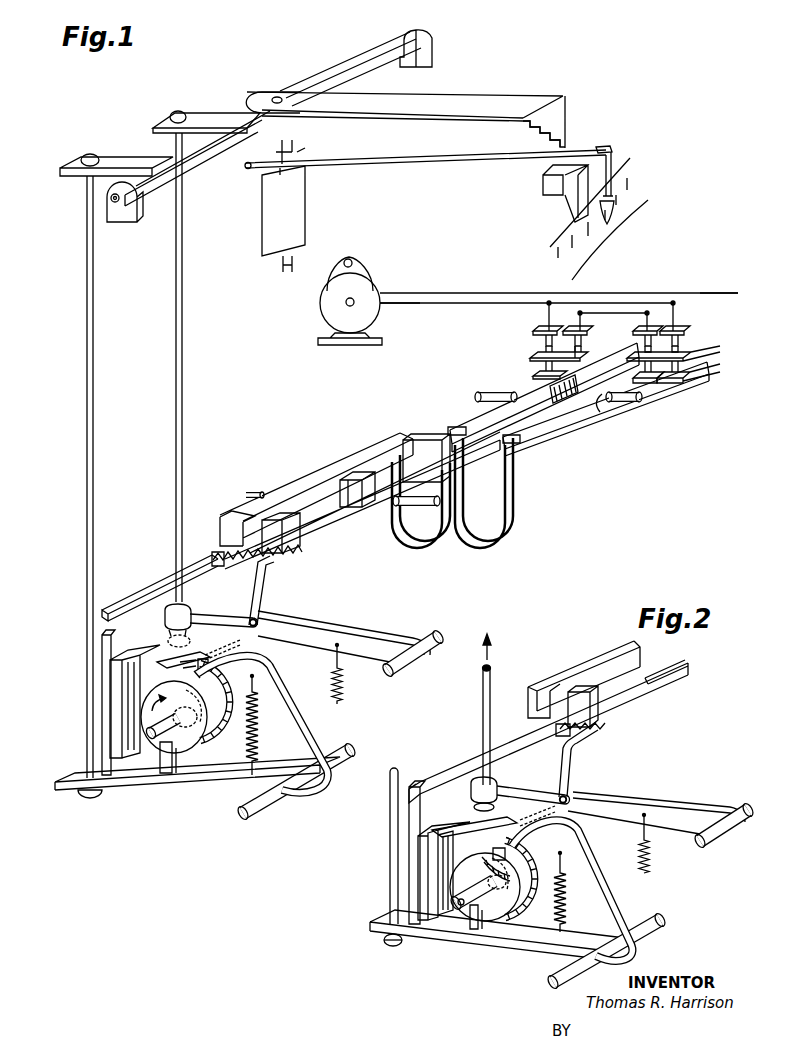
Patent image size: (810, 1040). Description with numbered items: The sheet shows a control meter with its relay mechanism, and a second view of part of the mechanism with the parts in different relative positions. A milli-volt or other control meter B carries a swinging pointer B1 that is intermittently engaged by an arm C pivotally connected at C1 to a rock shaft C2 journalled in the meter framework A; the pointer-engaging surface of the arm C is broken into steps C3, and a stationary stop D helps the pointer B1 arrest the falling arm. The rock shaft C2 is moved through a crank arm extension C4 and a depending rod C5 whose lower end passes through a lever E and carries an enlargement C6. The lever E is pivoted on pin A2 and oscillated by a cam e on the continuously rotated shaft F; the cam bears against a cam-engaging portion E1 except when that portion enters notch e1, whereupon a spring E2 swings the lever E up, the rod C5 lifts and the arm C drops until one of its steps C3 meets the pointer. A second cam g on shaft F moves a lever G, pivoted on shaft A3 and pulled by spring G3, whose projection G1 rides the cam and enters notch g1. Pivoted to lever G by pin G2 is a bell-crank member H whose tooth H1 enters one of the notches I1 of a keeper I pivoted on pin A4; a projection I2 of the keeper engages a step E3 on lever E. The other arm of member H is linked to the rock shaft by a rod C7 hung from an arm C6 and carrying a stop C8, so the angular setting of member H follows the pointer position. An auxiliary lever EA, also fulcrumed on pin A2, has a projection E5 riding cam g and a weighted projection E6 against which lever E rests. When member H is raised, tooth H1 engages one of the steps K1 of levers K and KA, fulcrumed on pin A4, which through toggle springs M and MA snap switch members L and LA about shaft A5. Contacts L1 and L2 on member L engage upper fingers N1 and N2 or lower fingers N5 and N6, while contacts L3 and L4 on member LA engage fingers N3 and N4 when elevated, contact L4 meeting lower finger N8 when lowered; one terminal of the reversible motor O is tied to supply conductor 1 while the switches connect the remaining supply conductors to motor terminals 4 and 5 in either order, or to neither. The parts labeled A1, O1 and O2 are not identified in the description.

In FIG. 1, the crank arm extension C4 is at (116, 165).
In FIG. 1, the depending rod C5 is at (87, 472).
In FIG. 2, the depending rod C5 is at (390, 868).
In FIG. 1, the meter framework A is at (123, 222).
In FIG. 1, the arm C is at (492, 103).
In FIG. 1, the enlargement C6 is at (211, 113).
In FIG. 2, the enlargement C6 is at (386, 945).
In FIG. 1, the depending rod C7 is at (183, 423).
In FIG. 2, the depending rod C7 is at (492, 678).
In FIG. 1, the pivotal connection C1 is at (277, 96).
In FIG. 1, the rock shaft C2 is at (360, 58).
In FIG. 1, the steps or notches C3 is at (556, 143).
In FIG. 1, the swinging pointer B1 is at (399, 163).
In FIG. 1, the stationary stop D is at (609, 148).
In FIG. 1, the control meter B is at (300, 200).
In FIG. 1, the hatched support A1 is at (606, 253).
In FIG. 1, the reversible motor O is at (322, 313).
In FIG. 1, the upper hole O2 is at (352, 263).
In FIG. 1, the pivot hole O1 is at (355, 300).
In FIG. 1, the motor terminal 4 is at (454, 304).
In FIG. 1, the motor terminal 5 is at (419, 304).
In FIG. 1, the supply conductor 1 is at (736, 296).
In FIG. 1, the spring contact finger N4 is at (541, 331).
In FIG. 1, the spring contact finger N3 is at (589, 333).
In FIG. 1, the upper spring contact finger N2 is at (641, 335).
In FIG. 1, the upper spring contact finger N1 is at (692, 333).
In FIG. 1, the contact L4 is at (536, 356).
In FIG. 1, the contact L3 is at (583, 355).
In FIG. 1, the contact L2 is at (636, 353).
In FIG. 1, the contact L1 is at (689, 355).
In FIG. 1, the lower spring contact finger N8 is at (533, 374).
In FIG. 1, the lower spring contact finger N6 is at (652, 383).
In FIG. 1, the lower spring contact finger N5 is at (694, 380).
In FIG. 1, the switch member LA is at (468, 440).
In FIG. 1, the switch member L is at (540, 437).
In FIG. 1, the shaft A5 is at (630, 404).
In FIG. 1, the lever KA is at (291, 487).
In FIG. 2, the lever KA is at (597, 663).
In FIG. 1, the lever K is at (316, 500).
In FIG. 2, the lever K is at (628, 690).
In FIG. 1, the keeper I is at (355, 512).
In FIG. 2, the keeper I is at (668, 684).
In FIG. 1, the steps K1 is at (262, 552).
In FIG. 2, the steps K1 is at (606, 730).
In FIG. 1, the notches I1 is at (213, 552).
In FIG. 2, the notches I1 is at (556, 722).
In FIG. 1, the projection I2 is at (150, 602).
In FIG. 2, the projection I2 is at (458, 760).
In FIG. 1, the tooth H1 is at (252, 562).
In FIG. 2, the tooth H1 is at (590, 742).
In FIG. 1, the member H is at (228, 614).
In FIG. 2, the member H is at (550, 791).
In FIG. 1, the enlargement C8 is at (165, 622).
In FIG. 2, the enlargement C8 is at (471, 798).
In FIG. 1, the cam engaging projection G1 is at (150, 668).
In FIG. 2, the cam engaging projection G1 is at (580, 836).
In FIG. 1, the lever G is at (338, 633).
In FIG. 2, the lever G is at (671, 801).
In FIG. 1, the pivot pin G2 is at (262, 630).
In FIG. 2, the pivot pin G2 is at (571, 797).
In FIG. 1, the step E3 is at (101, 641).
In FIG. 2, the step E3 is at (410, 840).
In FIG. 1, the cam notch g1 is at (170, 697).
In FIG. 1, the projection E5 is at (256, 673).
In FIG. 2, the projection E5 is at (492, 853).
In FIG. 1, the spring G3 is at (342, 696).
In FIG. 2, the spring G3 is at (651, 860).
In FIG. 1, the pivot shaft A3 is at (398, 670).
In FIG. 2, the pivot shaft A3 is at (707, 842).
In FIG. 1, the weighted projection E6 is at (113, 723).
In FIG. 2, the weighted projection E6 is at (423, 887).
In FIG. 1, the shaft F is at (152, 731).
In FIG. 2, the shaft F is at (458, 905).
In FIG. 1, the second cam g is at (218, 728).
In FIG. 2, the second cam g is at (506, 846).
In FIG. 1, the cam e is at (198, 722).
In FIG. 2, the cam e is at (483, 893).
In FIG. 1, the cam notch e1 is at (181, 761).
In FIG. 2, the cam notch e1 is at (466, 910).
In FIG. 1, the cam engaging portion E1 is at (164, 770).
In FIG. 2, the cam engaging portion E1 is at (476, 929).
In FIG. 1, the spring E2 is at (245, 752).
In FIG. 2, the spring E2 is at (553, 908).
In FIG. 1, the auxiliary lever EA is at (332, 734).
In FIG. 2, the auxiliary lever EA is at (632, 916).
In FIG. 1, the pivot pin A2 is at (258, 818).
In FIG. 2, the pivot pin A2 is at (570, 988).
In FIG. 1, the lever E is at (57, 786).
In FIG. 2, the lever E is at (370, 926).
In FIG. 1, the toggle spring MA is at (410, 550).
In FIG. 1, the pivot pin A4 is at (436, 510).
In FIG. 1, the toggle spring M is at (507, 533).